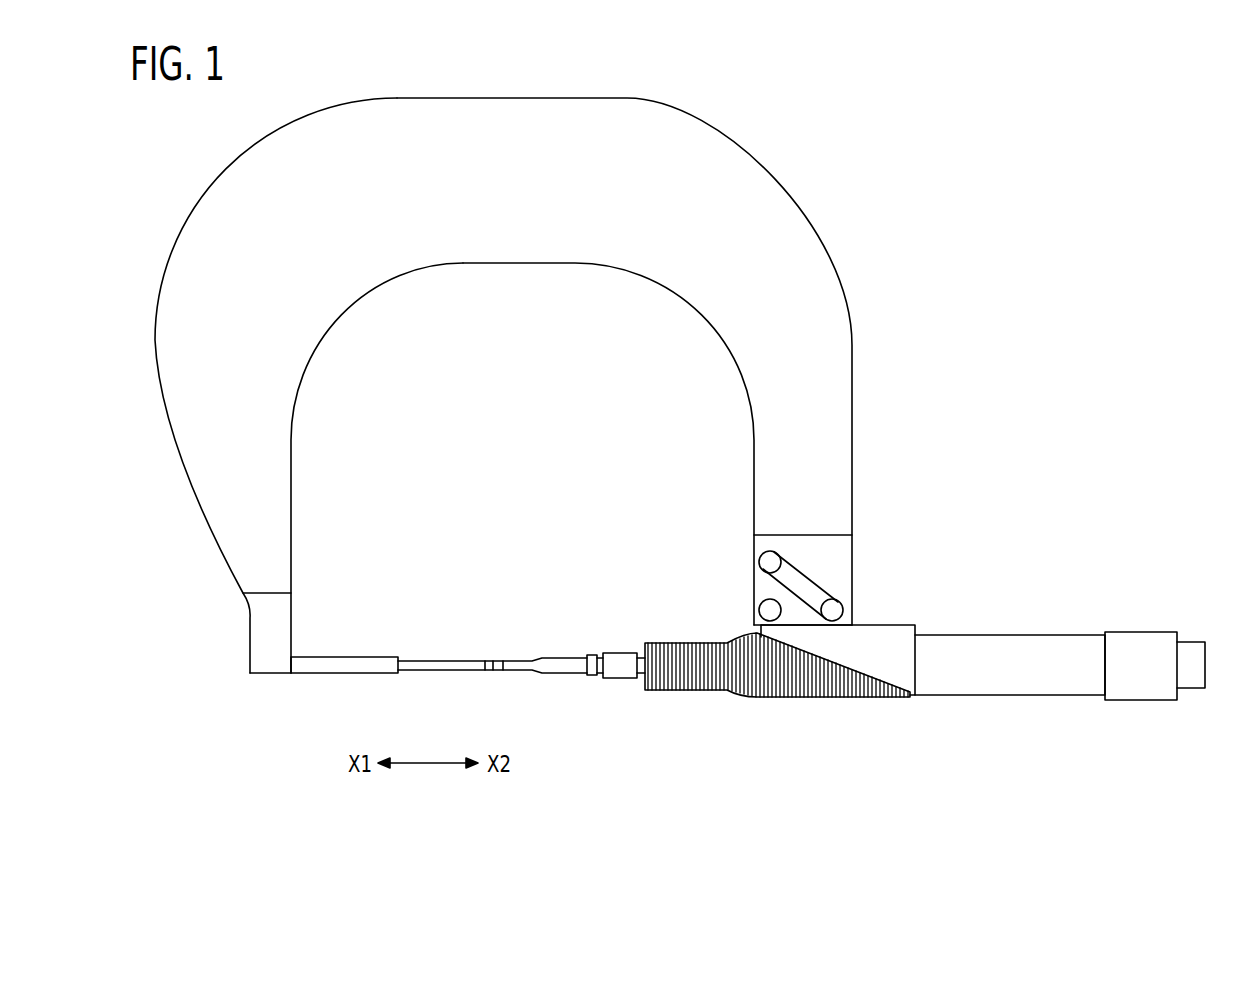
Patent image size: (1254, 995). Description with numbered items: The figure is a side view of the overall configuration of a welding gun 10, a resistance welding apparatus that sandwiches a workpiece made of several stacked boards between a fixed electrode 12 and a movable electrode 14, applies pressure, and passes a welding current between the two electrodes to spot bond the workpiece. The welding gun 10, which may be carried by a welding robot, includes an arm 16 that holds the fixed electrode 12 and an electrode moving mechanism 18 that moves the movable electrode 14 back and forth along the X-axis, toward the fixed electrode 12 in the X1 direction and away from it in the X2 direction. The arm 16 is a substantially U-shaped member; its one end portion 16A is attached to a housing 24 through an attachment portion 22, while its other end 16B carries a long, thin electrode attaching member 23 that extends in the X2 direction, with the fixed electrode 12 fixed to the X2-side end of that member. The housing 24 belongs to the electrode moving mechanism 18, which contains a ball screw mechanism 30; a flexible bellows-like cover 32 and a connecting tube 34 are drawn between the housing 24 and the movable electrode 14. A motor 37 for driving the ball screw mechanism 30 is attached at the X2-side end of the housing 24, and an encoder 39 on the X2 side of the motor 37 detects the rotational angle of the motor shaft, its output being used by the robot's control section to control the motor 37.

The welding gun 10 is at (893, 217).
The fixed electrode 12 is at (489, 660).
The movable electrode 14 is at (500, 660).
The arm 16 is at (797, 194).
The one end portion of the arm 16A is at (853, 500).
The other end of the arm 16B is at (247, 620).
The electrode moving mechanism 18 is at (1080, 605).
The attachment portion 22 is at (752, 556).
The electrode attaching member 23 is at (332, 656).
The housing 24 is at (985, 685).
The ball screw mechanism 30 is at (957, 652).
The bend preventing portion 32 is at (692, 692).
The connecting tube 34 is at (566, 675).
The motor 37 is at (1133, 685).
The encoder 39 is at (1197, 685).